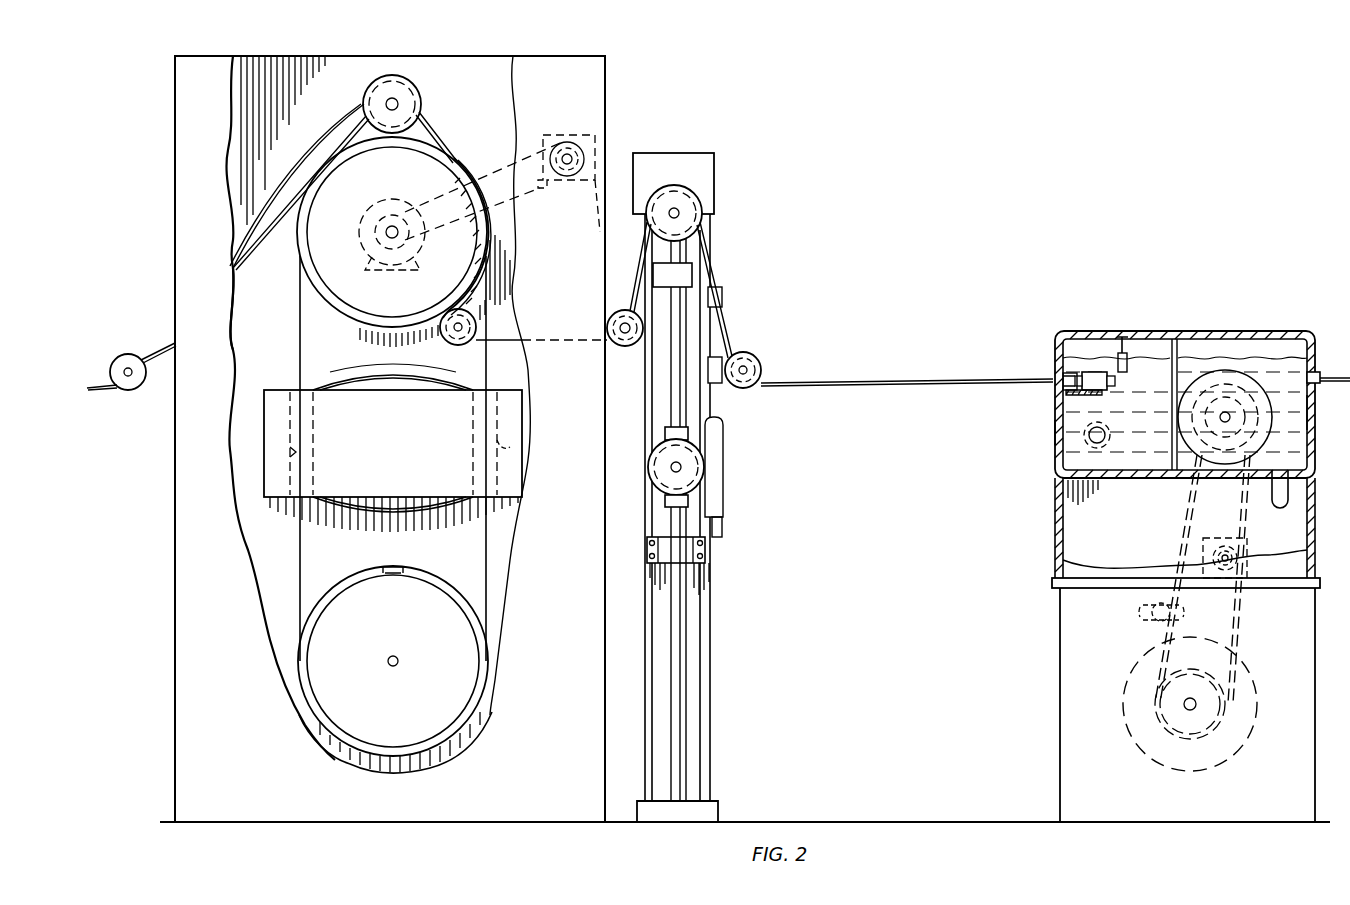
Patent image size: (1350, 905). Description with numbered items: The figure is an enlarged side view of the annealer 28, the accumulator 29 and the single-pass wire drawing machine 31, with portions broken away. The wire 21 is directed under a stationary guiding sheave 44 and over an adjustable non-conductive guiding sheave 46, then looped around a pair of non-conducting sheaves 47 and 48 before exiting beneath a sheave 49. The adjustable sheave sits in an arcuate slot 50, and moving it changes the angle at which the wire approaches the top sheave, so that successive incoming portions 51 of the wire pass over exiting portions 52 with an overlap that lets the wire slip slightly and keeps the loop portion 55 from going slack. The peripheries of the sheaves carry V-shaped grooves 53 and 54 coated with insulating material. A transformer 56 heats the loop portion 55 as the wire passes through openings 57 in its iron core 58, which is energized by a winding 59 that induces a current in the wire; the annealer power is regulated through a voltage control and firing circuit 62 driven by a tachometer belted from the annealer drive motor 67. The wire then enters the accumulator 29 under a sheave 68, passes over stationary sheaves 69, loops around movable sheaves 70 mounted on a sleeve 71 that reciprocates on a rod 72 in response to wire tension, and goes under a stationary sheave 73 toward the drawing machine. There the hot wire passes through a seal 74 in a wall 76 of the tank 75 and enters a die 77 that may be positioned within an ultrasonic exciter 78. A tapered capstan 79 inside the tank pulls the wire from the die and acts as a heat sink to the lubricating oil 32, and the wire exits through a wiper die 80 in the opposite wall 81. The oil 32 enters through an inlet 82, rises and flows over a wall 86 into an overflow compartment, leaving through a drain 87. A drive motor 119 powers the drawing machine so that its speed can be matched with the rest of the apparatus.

The wire 21 is at (163, 351).
The annealer 28 is at (146, 219).
The accumulator 29 is at (722, 185).
The single-pass wire drawing machine 31 is at (1221, 265).
The lubricating oil 32 is at (1297, 448).
The stationary rotatably guiding sheave 44 is at (124, 357).
The adjustable moveable rotatably non-conductive guiding sheave 46 is at (402, 78).
The non-conducting sheave 47 is at (330, 252).
The non-conducting sheave 48 is at (320, 660).
The sheave 49 is at (476, 320).
The arcuate slot 50 is at (340, 118).
The incoming portion of the wire 51 is at (440, 132).
The exiting portion of the wire 52 is at (455, 303).
The V-shaped groove 53 is at (519, 357).
The V-shaped groove 54 is at (396, 570).
The loop portion of the wire 55 is at (300, 573).
The transformer 56 is at (262, 488).
The openings in the iron core 57 is at (288, 452).
The iron core 58 is at (272, 420).
The winding 59 is at (303, 370).
The voltage control and firing circuit 62 is at (498, 440).
The annealer drive motor 67 is at (397, 220).
The sheave 68 is at (624, 310).
The stationary sheave 69 is at (702, 213).
The movable sheave 70 is at (704, 471).
The sleeve 71 is at (690, 431).
The rod 72 is at (680, 405).
The stationary sheave 73 is at (757, 362).
The seal 74 is at (1052, 385).
The tank 75 is at (583, 130).
The wall of the tank 76 is at (1053, 432).
The die 77 is at (1070, 373).
The ultrasonic exciter 78 is at (1093, 372).
The capstan 79 is at (1232, 372).
The wiper die 80 is at (1315, 372).
The wall of the tank 81 is at (1312, 411).
The inlet 82 is at (1090, 442).
The wall of the overflow compartment 86 is at (1170, 433).
The drain 87 is at (1292, 490).
The drive motor 119 is at (1232, 670).